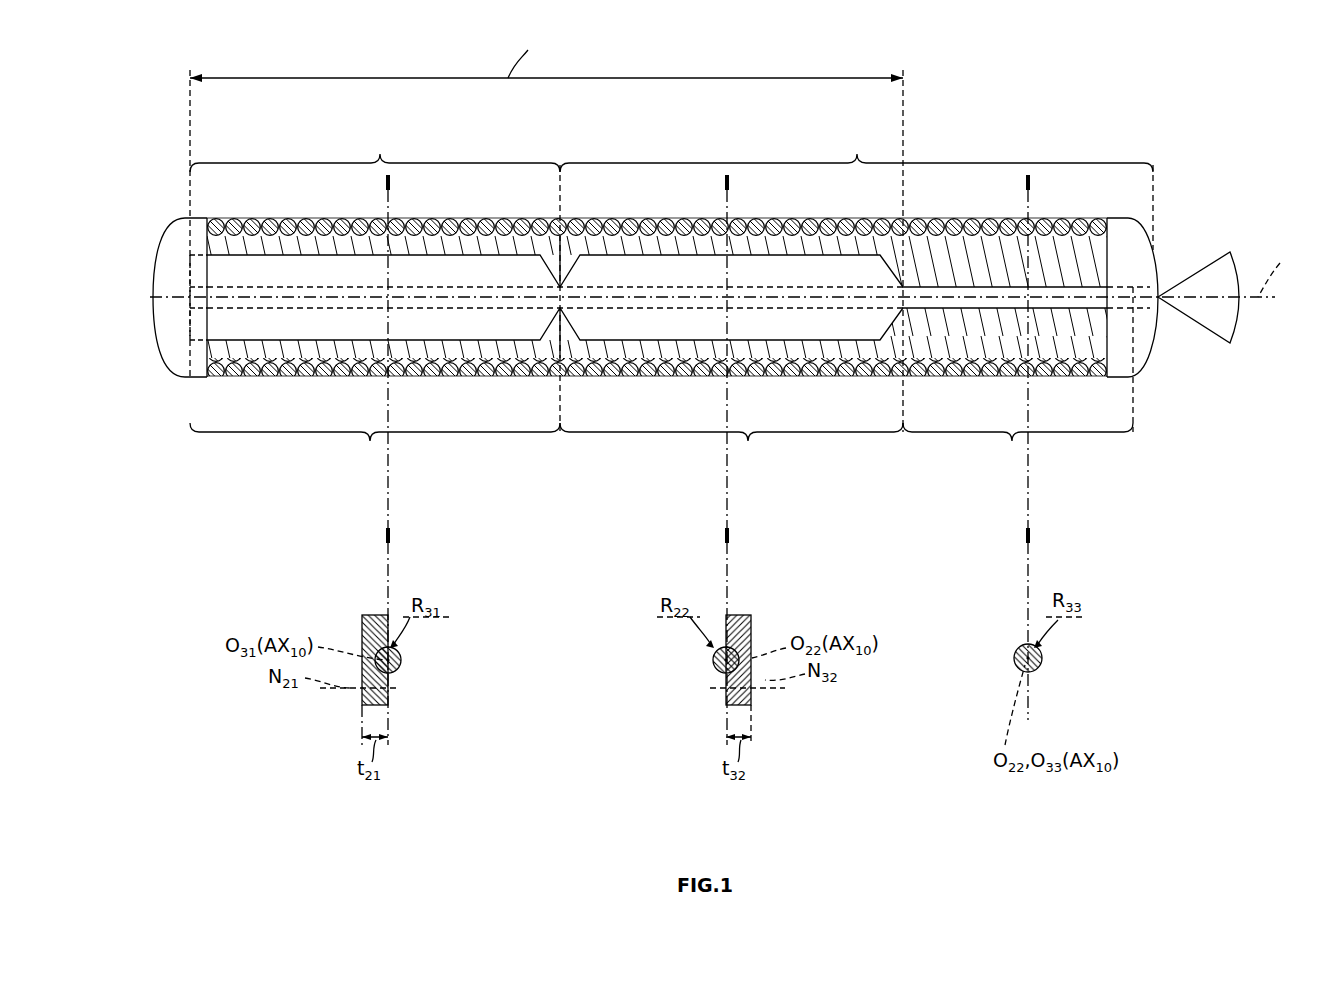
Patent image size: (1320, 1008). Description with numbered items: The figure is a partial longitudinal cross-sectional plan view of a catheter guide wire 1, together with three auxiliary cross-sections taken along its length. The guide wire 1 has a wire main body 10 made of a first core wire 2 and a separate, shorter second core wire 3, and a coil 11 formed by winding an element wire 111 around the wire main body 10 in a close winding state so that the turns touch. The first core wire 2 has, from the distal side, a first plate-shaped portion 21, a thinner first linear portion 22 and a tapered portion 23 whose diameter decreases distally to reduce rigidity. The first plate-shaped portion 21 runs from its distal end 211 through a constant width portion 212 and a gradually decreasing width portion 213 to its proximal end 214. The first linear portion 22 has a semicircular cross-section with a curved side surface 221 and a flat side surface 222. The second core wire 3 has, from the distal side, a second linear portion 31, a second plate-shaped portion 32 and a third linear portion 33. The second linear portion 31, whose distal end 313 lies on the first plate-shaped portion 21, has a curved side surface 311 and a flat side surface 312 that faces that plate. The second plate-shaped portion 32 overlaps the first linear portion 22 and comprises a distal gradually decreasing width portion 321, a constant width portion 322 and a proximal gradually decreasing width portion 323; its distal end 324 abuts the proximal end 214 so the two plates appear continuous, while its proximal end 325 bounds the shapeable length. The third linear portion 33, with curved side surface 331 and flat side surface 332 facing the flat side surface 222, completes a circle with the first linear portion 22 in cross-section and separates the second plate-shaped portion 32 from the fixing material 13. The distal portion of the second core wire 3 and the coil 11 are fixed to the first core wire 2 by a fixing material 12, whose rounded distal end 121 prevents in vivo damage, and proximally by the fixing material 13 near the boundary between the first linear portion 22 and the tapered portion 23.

The guide wire 1 is at (1162, 91).
The wire main body 10 is at (750, 267).
The coil 11 is at (842, 212).
The element wire 111 is at (763, 217).
The fixing material 12 is at (172, 355).
The distal end 121 is at (155, 328).
The fixing material 13 is at (1145, 348).
The first core wire 2 is at (370, 129).
The first plate-shaped portion 21 is at (377, 615).
The distal end 211 is at (190, 268).
The constant width portion 212 is at (545, 211).
The gradually decreasing width portion 213 is at (560, 207).
The proximal end 214 is at (573, 283).
The first linear portion 22 is at (693, 697).
The side surface 221 is at (712, 657).
The flat side surface 222 is at (752, 642).
The tapered portion 23 is at (1153, 172).
The second core wire 3 is at (1022, 461).
The second linear portion 31 is at (435, 695).
The side surface 311 is at (314, 305).
The flat side surface 312 is at (362, 640).
The distal end 313 is at (180, 307).
The second plate-shaped portion 32 is at (740, 615).
The gradually decreasing width portion 321 is at (560, 379).
The constant width portion 322 is at (583, 384).
The gradually decreasing width portion 323 is at (903, 379).
The distal end 324 is at (555, 282).
The proximal end 325 is at (906, 283).
The third linear portion 33 is at (1050, 705).
The side surface 331 is at (962, 305).
The flat side surface 332 is at (1017, 650).